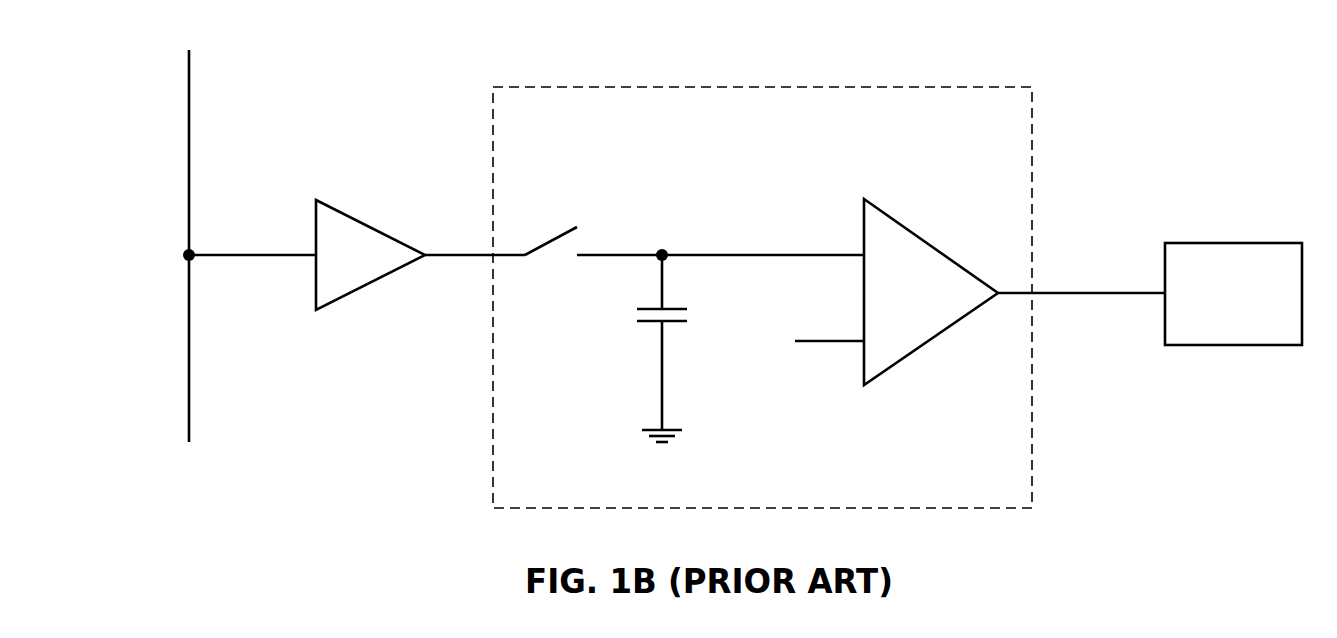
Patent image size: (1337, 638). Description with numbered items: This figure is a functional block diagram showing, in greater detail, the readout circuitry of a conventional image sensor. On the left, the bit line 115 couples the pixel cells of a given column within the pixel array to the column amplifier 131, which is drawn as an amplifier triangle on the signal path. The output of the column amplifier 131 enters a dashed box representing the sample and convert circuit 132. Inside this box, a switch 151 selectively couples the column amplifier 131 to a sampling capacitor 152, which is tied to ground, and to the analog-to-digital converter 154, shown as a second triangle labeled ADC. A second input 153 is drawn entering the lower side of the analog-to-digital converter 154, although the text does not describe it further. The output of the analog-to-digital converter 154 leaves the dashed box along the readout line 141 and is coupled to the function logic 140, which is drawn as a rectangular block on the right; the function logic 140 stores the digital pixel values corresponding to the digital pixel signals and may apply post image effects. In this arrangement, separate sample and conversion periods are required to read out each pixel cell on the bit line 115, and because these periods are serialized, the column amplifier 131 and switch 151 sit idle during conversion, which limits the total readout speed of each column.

The bit line 115 is at (212, 458).
The column amplifier 131 is at (357, 240).
The sample and convert circuit 132 is at (762, 297).
The function logic 140 is at (1233, 294).
The readout line 141 is at (1090, 300).
The switch 151 is at (552, 225).
The sampling capacitor 152 is at (626, 319).
The ADC input 153 is at (806, 358).
The analog-to-digital converter 154 is at (931, 292).